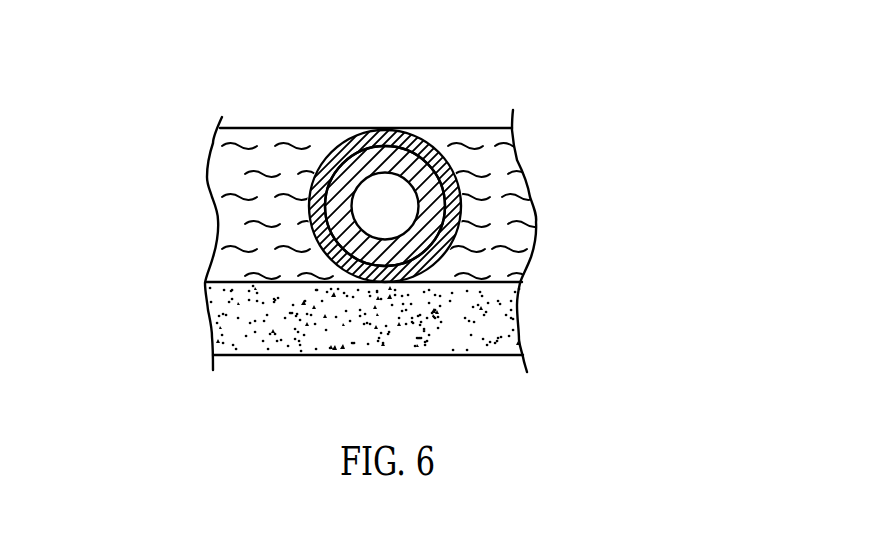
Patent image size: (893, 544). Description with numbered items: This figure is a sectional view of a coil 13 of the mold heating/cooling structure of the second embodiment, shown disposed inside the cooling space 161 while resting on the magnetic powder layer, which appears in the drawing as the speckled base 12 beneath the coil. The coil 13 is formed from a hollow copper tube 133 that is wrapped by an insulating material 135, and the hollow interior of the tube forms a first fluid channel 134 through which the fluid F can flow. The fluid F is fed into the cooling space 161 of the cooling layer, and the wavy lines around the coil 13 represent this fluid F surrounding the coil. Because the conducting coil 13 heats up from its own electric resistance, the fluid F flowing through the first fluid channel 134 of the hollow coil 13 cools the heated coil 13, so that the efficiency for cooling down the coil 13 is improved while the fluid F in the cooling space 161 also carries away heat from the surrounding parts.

The base plate 12 is at (490, 323).
The coil 13 is at (367, 163).
The hollow copper tube 133 is at (385, 190).
The first fluid channel 134 is at (445, 187).
The insulating material 135 is at (462, 208).
The cooling space 161 is at (240, 212).
The fluid F is at (512, 212).